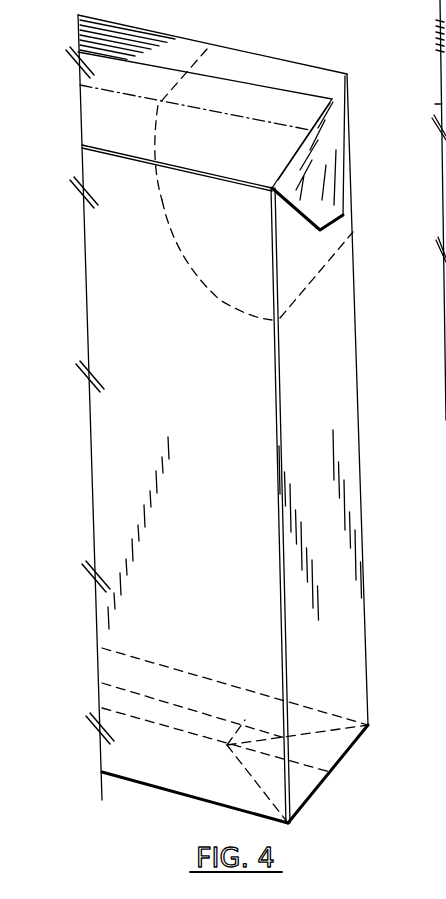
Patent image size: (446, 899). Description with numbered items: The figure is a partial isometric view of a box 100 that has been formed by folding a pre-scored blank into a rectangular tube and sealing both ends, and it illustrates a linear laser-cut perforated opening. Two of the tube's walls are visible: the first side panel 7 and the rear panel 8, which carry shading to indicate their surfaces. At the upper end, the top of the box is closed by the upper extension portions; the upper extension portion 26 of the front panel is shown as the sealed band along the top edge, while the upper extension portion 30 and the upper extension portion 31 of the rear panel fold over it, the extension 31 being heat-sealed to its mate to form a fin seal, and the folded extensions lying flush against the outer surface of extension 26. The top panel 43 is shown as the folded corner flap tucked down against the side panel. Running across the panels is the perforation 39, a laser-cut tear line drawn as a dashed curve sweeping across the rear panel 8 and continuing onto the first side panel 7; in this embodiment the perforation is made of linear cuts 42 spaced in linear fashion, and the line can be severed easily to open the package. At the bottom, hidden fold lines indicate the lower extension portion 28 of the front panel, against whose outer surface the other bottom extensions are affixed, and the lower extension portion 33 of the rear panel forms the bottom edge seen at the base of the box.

The box 100 is at (157, 22).
The upper extension portion 26 is at (237, 66).
The upper extension portion 31 is at (290, 110).
The top panel 43 is at (330, 80).
The upper extension portion 30 is at (263, 162).
The perforation 39 is at (157, 245).
The linear cuts 42 is at (205, 288).
The first side panel 7 is at (325, 380).
The rear panel 8 is at (155, 442).
The lower extension portion 28 is at (322, 707).
The lower extension portion 33 is at (187, 778).